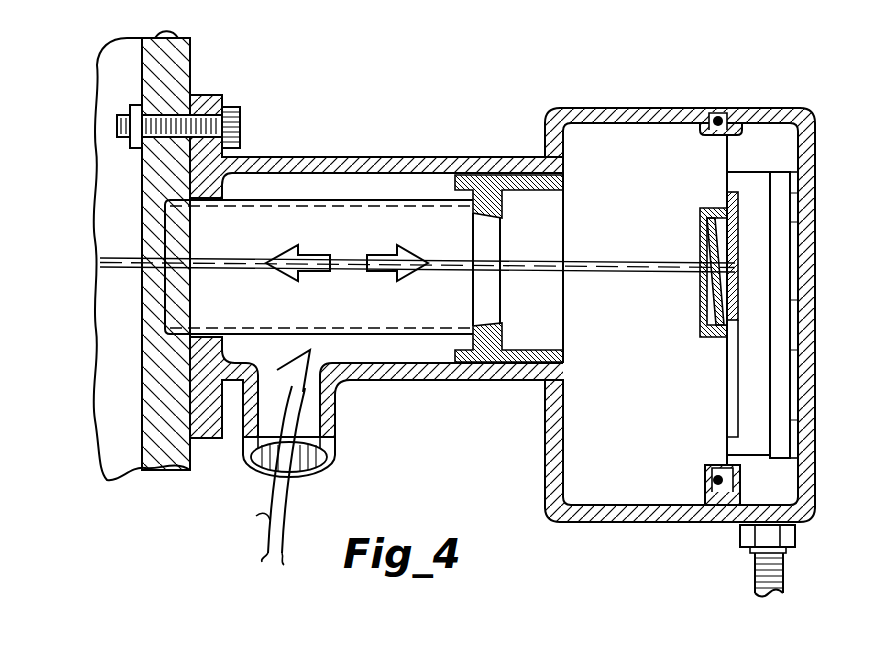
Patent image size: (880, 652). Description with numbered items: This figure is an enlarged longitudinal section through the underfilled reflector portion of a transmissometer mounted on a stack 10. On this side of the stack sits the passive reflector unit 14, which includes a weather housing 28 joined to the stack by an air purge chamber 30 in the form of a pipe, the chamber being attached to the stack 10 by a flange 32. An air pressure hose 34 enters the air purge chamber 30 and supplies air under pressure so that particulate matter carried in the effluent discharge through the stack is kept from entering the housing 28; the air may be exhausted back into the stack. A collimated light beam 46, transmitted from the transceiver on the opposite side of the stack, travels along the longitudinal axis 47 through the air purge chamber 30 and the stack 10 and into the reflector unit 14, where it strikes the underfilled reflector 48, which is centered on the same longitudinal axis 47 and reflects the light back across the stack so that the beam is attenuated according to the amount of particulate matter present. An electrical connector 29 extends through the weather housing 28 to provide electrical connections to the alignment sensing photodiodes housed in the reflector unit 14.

The stack 10 is at (192, 52).
The flange 32 is at (224, 98).
The air purge chamber 30 is at (460, 157).
The passive reflector unit 14 is at (704, 109).
The collimated light beam 46 is at (643, 263).
The underfilled reflector 48 is at (712, 304).
The longitudinal axis 47 is at (253, 264).
The air pressure hose 34 is at (328, 444).
The weather housing 28 is at (650, 523).
The electrical connector 29 is at (755, 570).